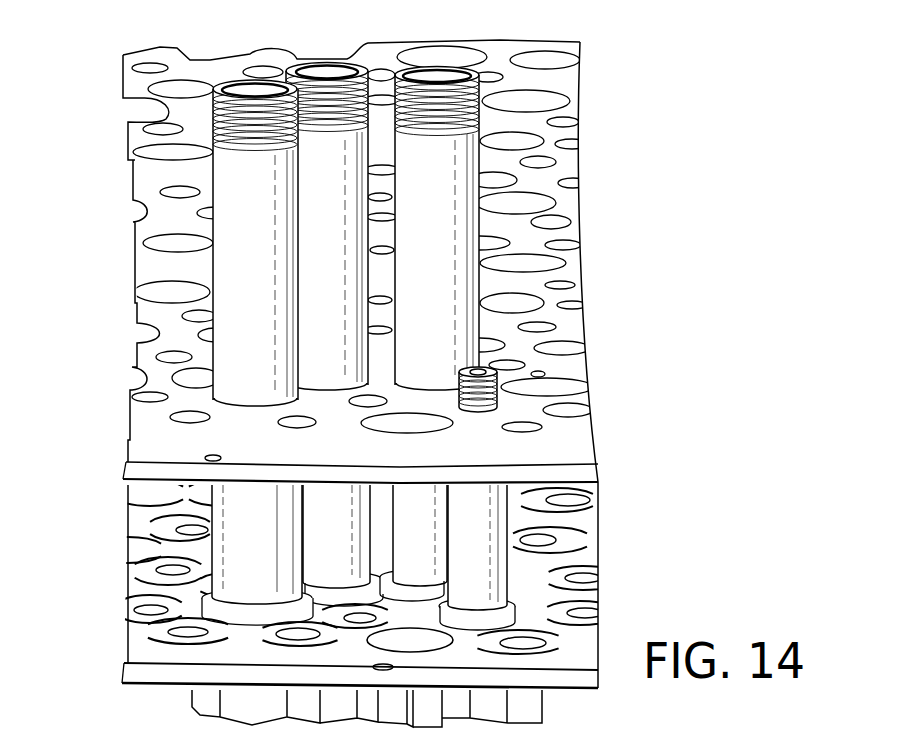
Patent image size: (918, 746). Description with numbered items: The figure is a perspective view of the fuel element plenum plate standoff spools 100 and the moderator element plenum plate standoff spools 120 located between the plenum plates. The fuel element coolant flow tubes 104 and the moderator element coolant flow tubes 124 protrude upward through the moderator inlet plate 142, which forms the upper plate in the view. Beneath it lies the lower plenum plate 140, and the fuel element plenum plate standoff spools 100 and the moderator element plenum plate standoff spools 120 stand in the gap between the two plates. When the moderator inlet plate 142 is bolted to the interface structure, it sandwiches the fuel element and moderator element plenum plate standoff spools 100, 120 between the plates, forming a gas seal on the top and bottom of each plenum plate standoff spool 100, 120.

The fuel element plenum plate standoff spool 100 is at (318, 514).
The fuel element coolant flow tube 104 is at (470, 157).
The moderator element plenum plate standoff spool 120 is at (527, 517).
The moderator element coolant flow tube 124 is at (512, 360).
The plenum plate 140 is at (150, 657).
The moderator inlet plate 142 is at (571, 447).